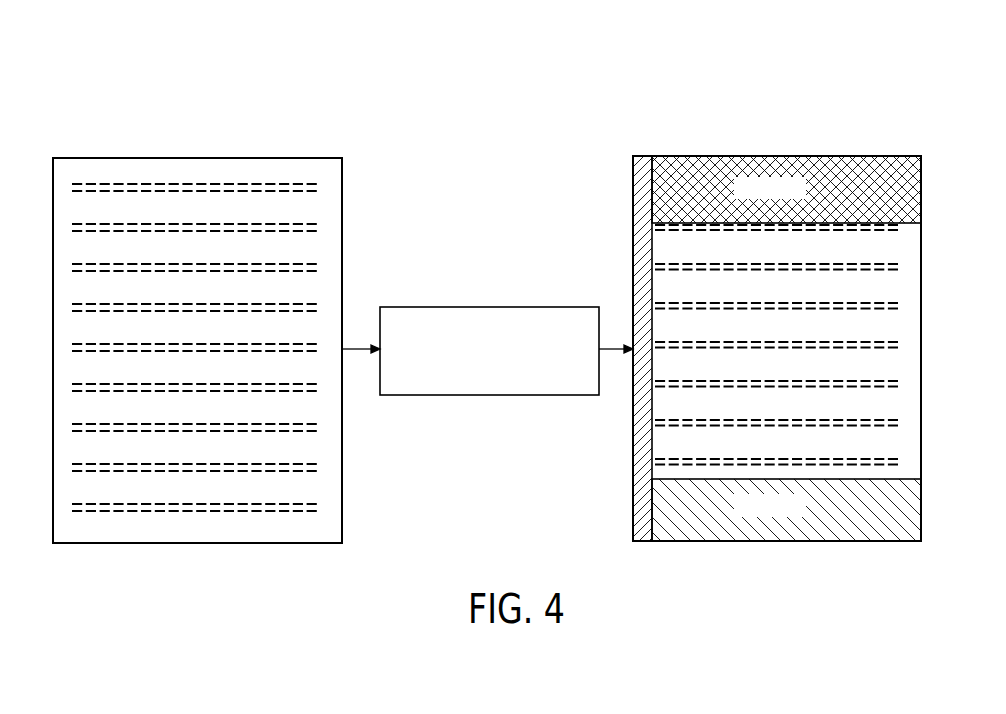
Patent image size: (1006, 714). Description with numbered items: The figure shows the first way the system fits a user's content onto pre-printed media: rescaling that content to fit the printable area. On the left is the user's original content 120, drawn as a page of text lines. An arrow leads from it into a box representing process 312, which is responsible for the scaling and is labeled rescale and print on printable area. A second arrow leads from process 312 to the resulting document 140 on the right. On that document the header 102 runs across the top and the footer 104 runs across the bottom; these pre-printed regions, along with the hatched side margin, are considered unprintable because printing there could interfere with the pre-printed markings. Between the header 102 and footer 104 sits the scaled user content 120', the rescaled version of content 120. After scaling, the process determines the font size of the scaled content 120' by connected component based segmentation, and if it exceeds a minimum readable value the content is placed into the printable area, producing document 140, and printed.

The user's content 120 is at (225, 350).
The process 312 is at (435, 307).
The document 140 is at (805, 308).
The header 102 is at (683, 160).
The footer 104 is at (827, 532).
The scaled user content 120' is at (816, 345).